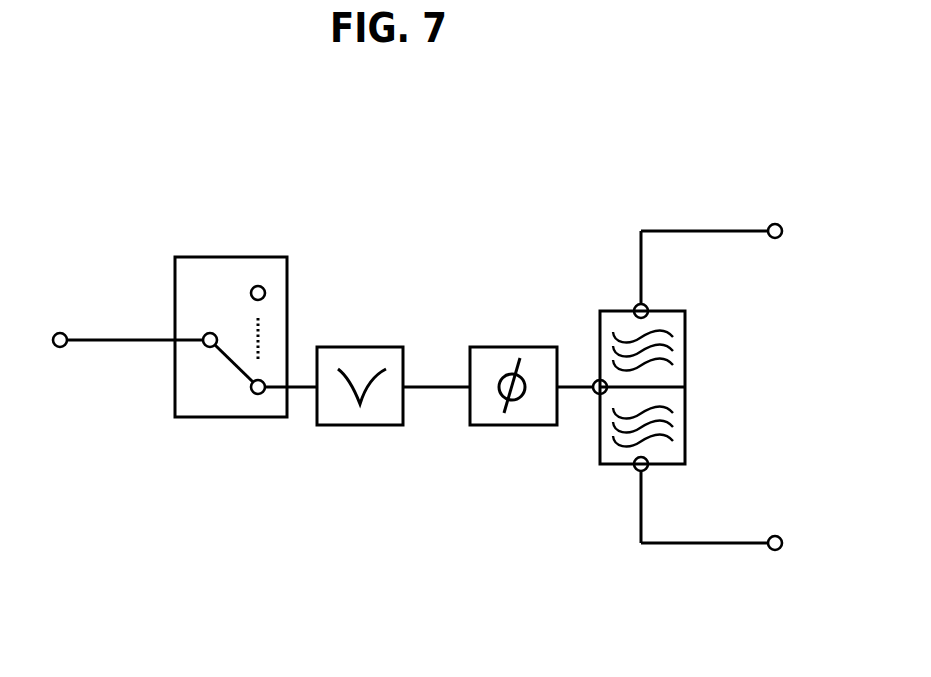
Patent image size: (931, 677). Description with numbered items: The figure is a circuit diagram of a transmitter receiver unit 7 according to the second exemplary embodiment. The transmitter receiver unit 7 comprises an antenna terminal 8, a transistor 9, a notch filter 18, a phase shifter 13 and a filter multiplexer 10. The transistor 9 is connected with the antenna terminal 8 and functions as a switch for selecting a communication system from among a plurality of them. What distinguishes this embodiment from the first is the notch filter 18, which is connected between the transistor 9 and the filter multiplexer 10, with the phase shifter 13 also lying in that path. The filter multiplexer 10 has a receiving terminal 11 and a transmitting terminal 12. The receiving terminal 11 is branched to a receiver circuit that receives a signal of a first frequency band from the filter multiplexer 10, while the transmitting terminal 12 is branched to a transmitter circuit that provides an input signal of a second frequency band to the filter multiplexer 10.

The transmitter receiver unit 7 is at (108, 248).
The antenna terminal 8 is at (57, 323).
The transistor 9 is at (229, 256).
The notch filter 18 is at (360, 345).
The phase shifter 13 is at (512, 345).
The filter multiplexer 10 is at (686, 397).
The receiving terminal 11 is at (775, 212).
The transmitting terminal 12 is at (775, 558).